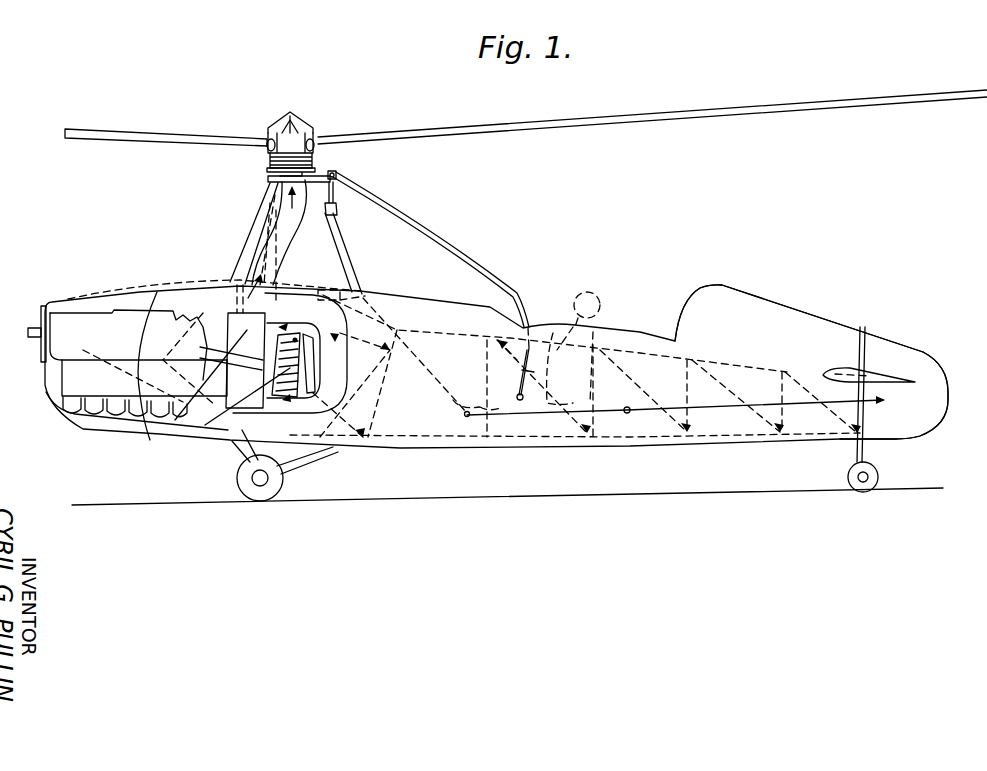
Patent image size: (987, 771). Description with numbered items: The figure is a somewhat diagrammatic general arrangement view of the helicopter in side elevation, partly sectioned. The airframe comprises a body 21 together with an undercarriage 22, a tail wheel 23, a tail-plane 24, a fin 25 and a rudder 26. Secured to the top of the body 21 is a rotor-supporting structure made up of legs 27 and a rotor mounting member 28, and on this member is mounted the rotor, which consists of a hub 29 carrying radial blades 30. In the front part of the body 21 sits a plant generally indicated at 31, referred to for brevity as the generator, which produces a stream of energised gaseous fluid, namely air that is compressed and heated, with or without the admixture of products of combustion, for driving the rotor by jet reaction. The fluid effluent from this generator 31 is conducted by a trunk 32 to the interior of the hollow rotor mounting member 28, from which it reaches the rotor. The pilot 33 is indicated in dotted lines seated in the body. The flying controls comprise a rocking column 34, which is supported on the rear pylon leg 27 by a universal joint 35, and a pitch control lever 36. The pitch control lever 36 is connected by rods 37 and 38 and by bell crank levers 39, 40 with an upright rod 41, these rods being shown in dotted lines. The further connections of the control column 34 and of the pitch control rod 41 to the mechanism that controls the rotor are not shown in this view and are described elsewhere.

The body 21 is at (402, 452).
The undercarriage 22 is at (247, 492).
The tail wheel 23 is at (871, 488).
The tail-plane 24 is at (872, 384).
The fin 25 is at (803, 323).
The rudder 26 is at (918, 355).
The legs 27 is at (355, 253).
The rotor mounting member 28 is at (268, 166).
The hub 29 is at (293, 140).
The radial blades 30 is at (450, 128).
The plant (generator) 31 is at (182, 410).
The trunk 32 is at (293, 233).
The pilot 33 is at (600, 322).
The rocking column 34 is at (433, 240).
The universal joint 35 is at (337, 175).
The pitch control lever 36 is at (534, 378).
The rod 37 is at (447, 348).
The rod 38 is at (318, 290).
The bell crank lever 39 is at (364, 296).
The bell crank lever 40 is at (277, 288).
The upright rod 41 is at (260, 216).